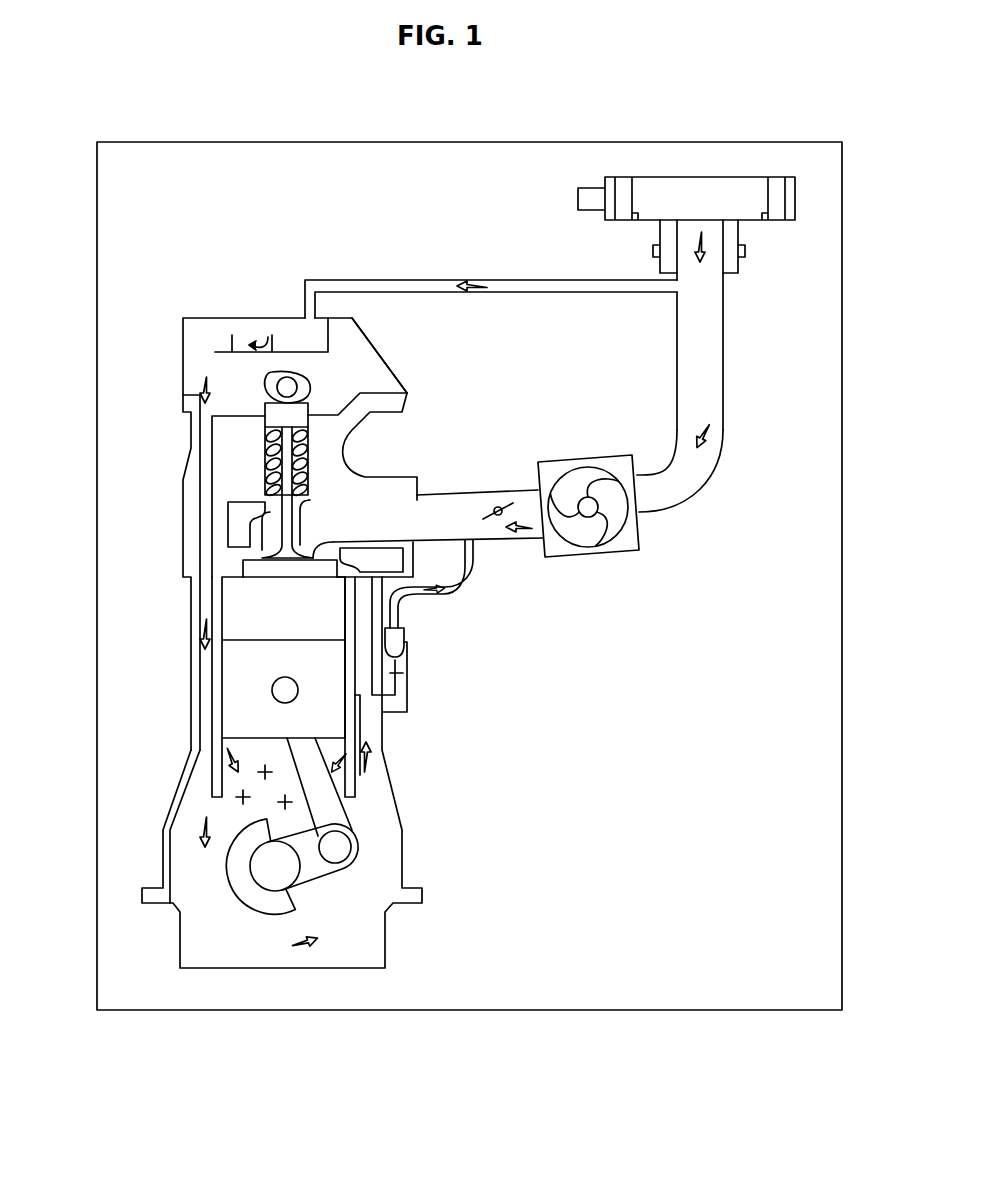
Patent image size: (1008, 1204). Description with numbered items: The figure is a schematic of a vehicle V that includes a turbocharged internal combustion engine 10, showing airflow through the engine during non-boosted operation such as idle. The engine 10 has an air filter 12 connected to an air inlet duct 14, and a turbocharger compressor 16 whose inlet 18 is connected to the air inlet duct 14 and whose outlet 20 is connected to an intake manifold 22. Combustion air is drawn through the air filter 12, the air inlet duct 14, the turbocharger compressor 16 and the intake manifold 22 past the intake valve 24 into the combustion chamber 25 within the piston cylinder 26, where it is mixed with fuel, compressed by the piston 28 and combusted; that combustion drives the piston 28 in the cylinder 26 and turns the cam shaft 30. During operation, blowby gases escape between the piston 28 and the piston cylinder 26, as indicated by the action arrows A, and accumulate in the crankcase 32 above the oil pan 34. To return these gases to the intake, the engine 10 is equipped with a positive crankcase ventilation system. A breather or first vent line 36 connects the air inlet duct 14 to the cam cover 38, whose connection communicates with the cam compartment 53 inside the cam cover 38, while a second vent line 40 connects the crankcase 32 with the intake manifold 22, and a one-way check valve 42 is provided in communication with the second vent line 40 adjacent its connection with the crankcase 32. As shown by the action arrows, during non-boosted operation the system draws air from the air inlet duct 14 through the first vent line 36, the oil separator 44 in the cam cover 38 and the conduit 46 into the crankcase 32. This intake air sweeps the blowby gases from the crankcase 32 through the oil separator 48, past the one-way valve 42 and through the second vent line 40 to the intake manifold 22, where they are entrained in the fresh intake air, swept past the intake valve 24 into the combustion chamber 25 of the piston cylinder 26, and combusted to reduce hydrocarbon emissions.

The turbocharged internal combustion engine 10 is at (190, 185).
The vehicle V is at (778, 142).
The air filter 12 is at (780, 200).
The air inlet duct 14 is at (728, 352).
The turbocharger compressor 16 is at (603, 549).
The inlet 18 is at (637, 505).
The outlet 20 is at (540, 497).
The intake manifold 22 is at (498, 540).
The intake valve 24 is at (290, 533).
The combustion chamber 25 is at (252, 604).
The piston cylinder 26 is at (215, 630).
The piston 28 is at (250, 708).
The cam shaft 30 is at (270, 898).
The crankcase 32 is at (373, 852).
The oil pan 34 is at (330, 970).
The first vent line 36 is at (510, 277).
The cam cover 38 is at (207, 318).
The second vent line 40 is at (467, 578).
The one-way check valve 42 is at (404, 636).
The oil separator 44 is at (288, 335).
The conduit 46 is at (205, 483).
The oil separator 48 is at (395, 683).
The cam compartment 53 is at (358, 348).
The action arrows A is at (222, 756).